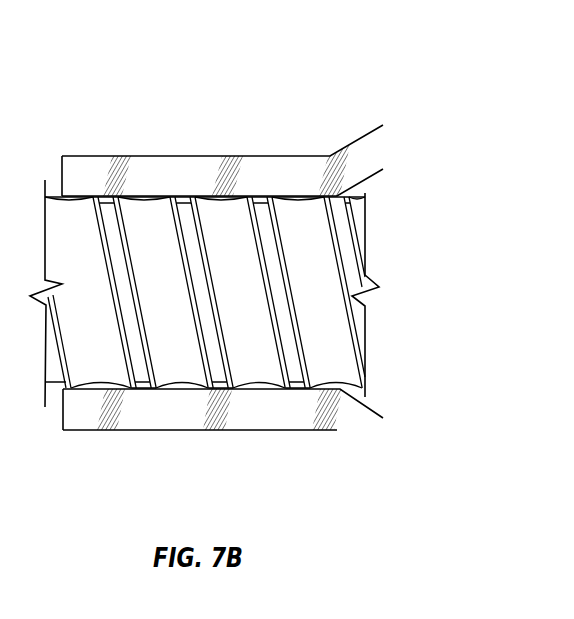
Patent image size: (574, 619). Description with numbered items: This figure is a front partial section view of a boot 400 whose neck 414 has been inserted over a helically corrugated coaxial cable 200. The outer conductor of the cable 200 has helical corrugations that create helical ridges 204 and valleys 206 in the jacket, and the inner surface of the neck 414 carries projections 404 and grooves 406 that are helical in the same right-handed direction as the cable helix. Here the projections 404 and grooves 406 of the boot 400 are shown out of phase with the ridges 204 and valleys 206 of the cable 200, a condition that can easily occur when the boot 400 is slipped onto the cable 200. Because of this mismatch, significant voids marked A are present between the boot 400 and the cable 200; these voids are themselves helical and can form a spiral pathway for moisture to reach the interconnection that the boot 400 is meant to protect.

The cable 200 is at (372, 260).
The helical ridges 204 is at (345, 219).
The helical valleys 206 is at (327, 297).
The boot 400 is at (155, 460).
The projections 404 is at (303, 386).
The grooves 406 is at (250, 388).
The neck 414 is at (85, 412).